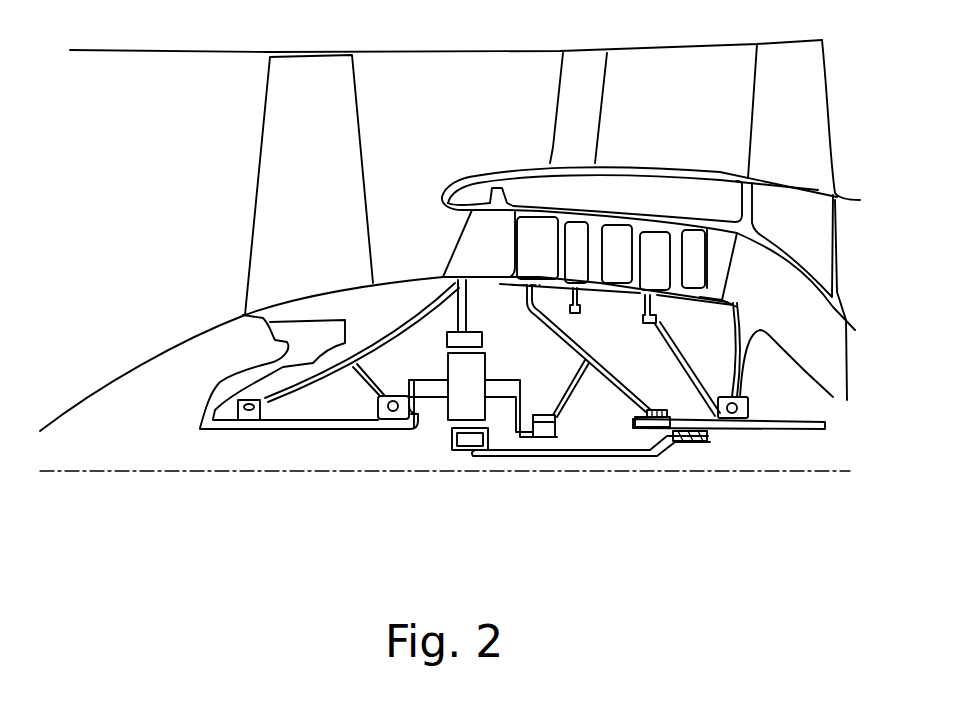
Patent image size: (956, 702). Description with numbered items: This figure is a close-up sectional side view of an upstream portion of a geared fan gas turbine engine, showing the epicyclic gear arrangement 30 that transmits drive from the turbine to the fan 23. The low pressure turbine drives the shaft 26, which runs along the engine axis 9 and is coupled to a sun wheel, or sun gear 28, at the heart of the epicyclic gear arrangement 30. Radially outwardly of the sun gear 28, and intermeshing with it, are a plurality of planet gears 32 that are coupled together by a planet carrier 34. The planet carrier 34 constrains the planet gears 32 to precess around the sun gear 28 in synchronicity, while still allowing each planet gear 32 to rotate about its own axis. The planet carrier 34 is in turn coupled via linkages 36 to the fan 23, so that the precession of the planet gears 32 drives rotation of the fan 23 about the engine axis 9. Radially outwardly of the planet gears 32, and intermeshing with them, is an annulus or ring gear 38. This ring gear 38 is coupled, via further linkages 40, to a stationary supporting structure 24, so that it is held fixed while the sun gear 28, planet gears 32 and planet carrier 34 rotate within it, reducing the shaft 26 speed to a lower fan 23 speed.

The engine axis 9 is at (222, 472).
The fan 23 is at (268, 184).
The stationary supporting structure 24 is at (474, 238).
The shaft 26 is at (625, 457).
The sun gear 28 is at (468, 443).
The epicyclic gear arrangement 30 is at (413, 453).
The planet gears 32 is at (450, 415).
The planet carrier 34 is at (507, 430).
The linkages 36 is at (420, 416).
The ring gear 38 is at (447, 342).
The linkages 40 is at (470, 320).